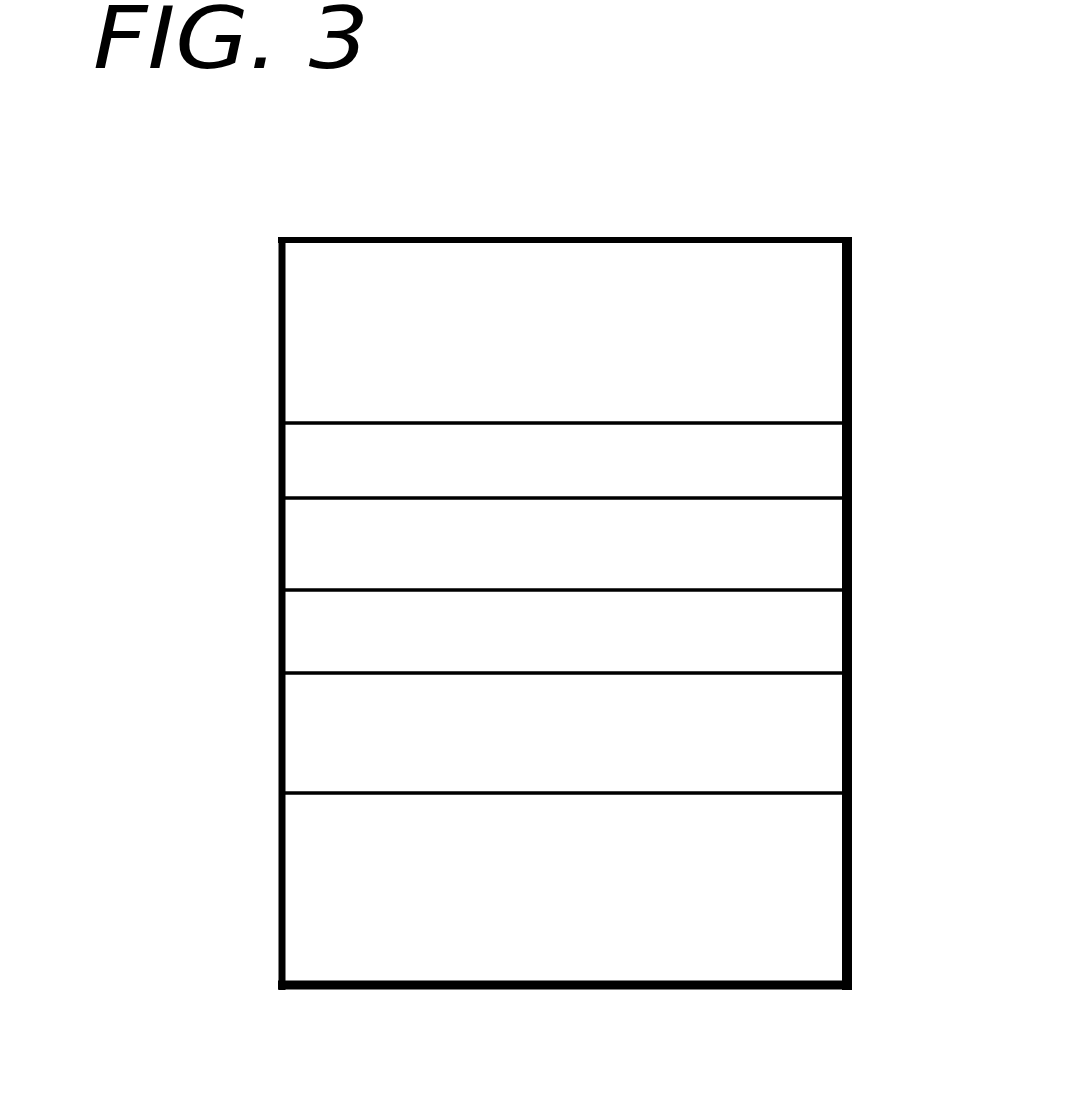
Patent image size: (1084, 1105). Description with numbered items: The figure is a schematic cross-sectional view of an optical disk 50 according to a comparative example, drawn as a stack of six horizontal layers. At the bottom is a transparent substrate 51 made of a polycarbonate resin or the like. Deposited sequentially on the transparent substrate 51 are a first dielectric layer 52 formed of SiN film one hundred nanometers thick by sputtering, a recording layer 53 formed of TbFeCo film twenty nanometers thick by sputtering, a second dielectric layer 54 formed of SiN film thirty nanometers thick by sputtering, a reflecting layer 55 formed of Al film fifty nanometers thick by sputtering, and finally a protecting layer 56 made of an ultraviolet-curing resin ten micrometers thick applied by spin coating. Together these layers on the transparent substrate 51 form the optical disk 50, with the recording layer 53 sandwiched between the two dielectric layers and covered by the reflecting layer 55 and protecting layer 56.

The optical disk 50 is at (778, 1050).
The transparent substrate 51 is at (826, 887).
The first dielectric layer 52 is at (826, 736).
The recording layer 53 is at (826, 634).
The second dielectric layer 54 is at (826, 543).
The reflecting layer 55 is at (826, 455).
The protecting layer 56 is at (826, 329).